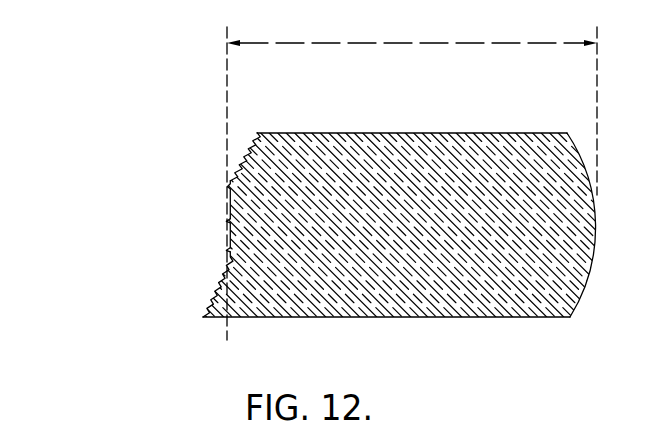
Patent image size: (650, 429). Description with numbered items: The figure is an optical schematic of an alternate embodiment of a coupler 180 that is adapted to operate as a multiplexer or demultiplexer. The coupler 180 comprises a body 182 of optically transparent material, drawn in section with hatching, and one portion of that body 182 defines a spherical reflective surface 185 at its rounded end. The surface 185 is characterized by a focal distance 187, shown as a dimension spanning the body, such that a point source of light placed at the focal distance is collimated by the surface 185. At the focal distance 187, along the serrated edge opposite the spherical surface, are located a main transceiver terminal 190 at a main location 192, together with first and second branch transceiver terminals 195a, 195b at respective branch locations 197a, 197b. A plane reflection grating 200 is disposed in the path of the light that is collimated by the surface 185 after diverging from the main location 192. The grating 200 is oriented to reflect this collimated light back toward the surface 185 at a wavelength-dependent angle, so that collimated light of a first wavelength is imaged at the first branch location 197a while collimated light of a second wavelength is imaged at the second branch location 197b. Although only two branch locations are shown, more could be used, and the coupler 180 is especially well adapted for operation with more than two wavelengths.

The coupler 180 is at (112, 216).
The body 182 is at (395, 300).
The spherical reflective surface 185 is at (640, 139).
The focal distance 187 is at (403, 44).
The main transceiver terminal 190 is at (227, 182).
The main location 192 is at (232, 188).
The first branch transceiver terminal 195a is at (228, 221).
The second branch transceiver terminal 195b is at (229, 253).
The first branch location 197a is at (234, 224).
The second branch location 197b is at (233, 253).
The plane reflection grating 200 is at (239, 148).